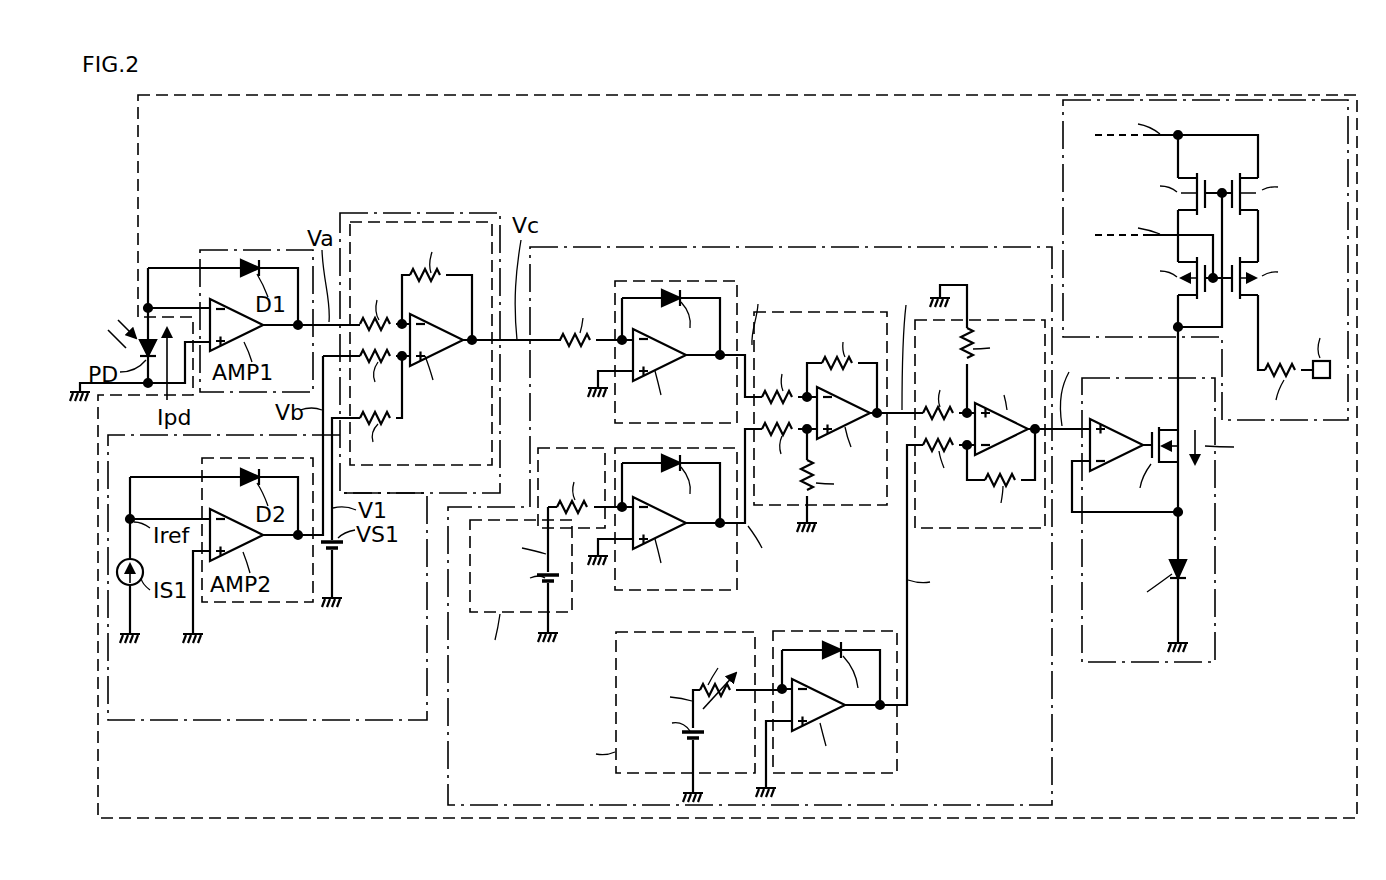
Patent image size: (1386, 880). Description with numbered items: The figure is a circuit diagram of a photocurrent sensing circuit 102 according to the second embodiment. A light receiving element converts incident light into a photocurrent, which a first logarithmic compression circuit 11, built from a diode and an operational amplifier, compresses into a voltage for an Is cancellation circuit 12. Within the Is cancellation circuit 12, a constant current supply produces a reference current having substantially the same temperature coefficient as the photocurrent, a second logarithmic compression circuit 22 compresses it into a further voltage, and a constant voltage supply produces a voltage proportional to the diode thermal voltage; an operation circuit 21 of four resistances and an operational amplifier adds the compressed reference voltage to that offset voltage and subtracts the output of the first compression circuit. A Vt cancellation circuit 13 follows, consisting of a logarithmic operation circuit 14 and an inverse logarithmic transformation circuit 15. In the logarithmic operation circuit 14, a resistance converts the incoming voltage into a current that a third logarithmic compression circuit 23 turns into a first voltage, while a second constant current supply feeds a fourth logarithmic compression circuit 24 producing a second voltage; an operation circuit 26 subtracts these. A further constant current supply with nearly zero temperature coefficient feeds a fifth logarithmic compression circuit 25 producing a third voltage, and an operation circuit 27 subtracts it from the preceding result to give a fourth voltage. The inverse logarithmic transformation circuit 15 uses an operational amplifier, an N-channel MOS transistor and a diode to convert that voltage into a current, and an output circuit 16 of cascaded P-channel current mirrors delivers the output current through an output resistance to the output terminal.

The photocurrent sensing circuit 102 is at (1255, 95).
The logarithmic compression circuit 11 is at (250, 250).
The Is cancellation circuit 12 is at (440, 213).
The operation circuit 21 is at (400, 466).
The logarithmic compression circuit 22 is at (258, 602).
The logarithmic compression circuit 23 is at (680, 282).
The logarithmic compression circuit 24 is at (680, 591).
The logarithmic compression circuit 25 is at (832, 631).
The operation circuit 26 is at (832, 312).
The operation circuit 27 is at (990, 320).
The Vt cancellation circuit 13 is at (1218, 668).
The logarithmic operation circuit 14 is at (1053, 727).
The inverse logarithmic transformation circuit 15 is at (1155, 663).
The output circuit 16 is at (1063, 180).